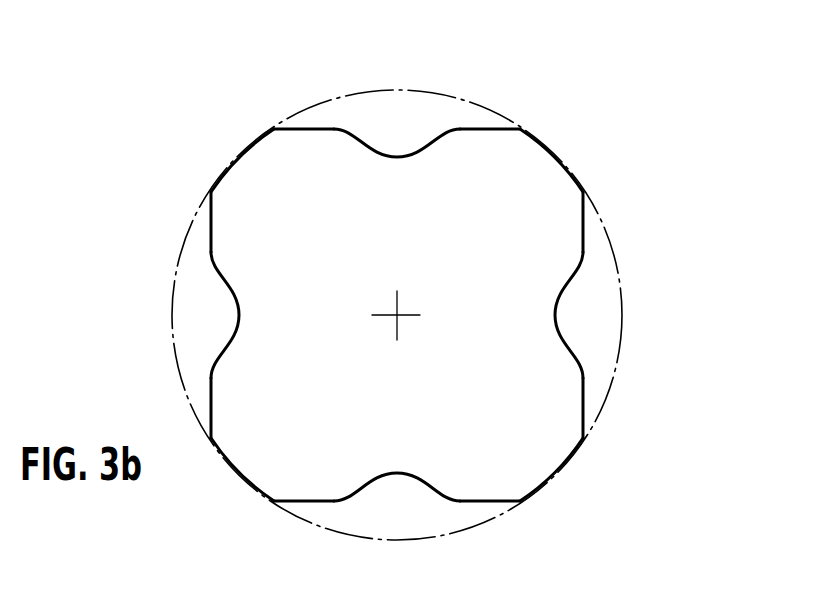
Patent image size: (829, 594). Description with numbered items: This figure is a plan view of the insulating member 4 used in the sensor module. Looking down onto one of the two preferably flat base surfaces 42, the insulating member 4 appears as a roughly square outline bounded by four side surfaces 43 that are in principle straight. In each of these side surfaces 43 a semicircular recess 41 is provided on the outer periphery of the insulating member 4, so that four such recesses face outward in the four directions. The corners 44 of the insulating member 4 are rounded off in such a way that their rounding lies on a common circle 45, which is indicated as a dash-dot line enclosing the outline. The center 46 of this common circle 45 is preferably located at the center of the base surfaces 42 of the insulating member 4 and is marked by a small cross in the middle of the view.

The insulating member 4 is at (688, 121).
The semicircular recess 41 is at (397, 156).
The base surface 42 is at (516, 219).
The side surface 43 is at (303, 128).
The corner 44 is at (238, 157).
The common circle 45 is at (617, 369).
The center 46 is at (388, 323).